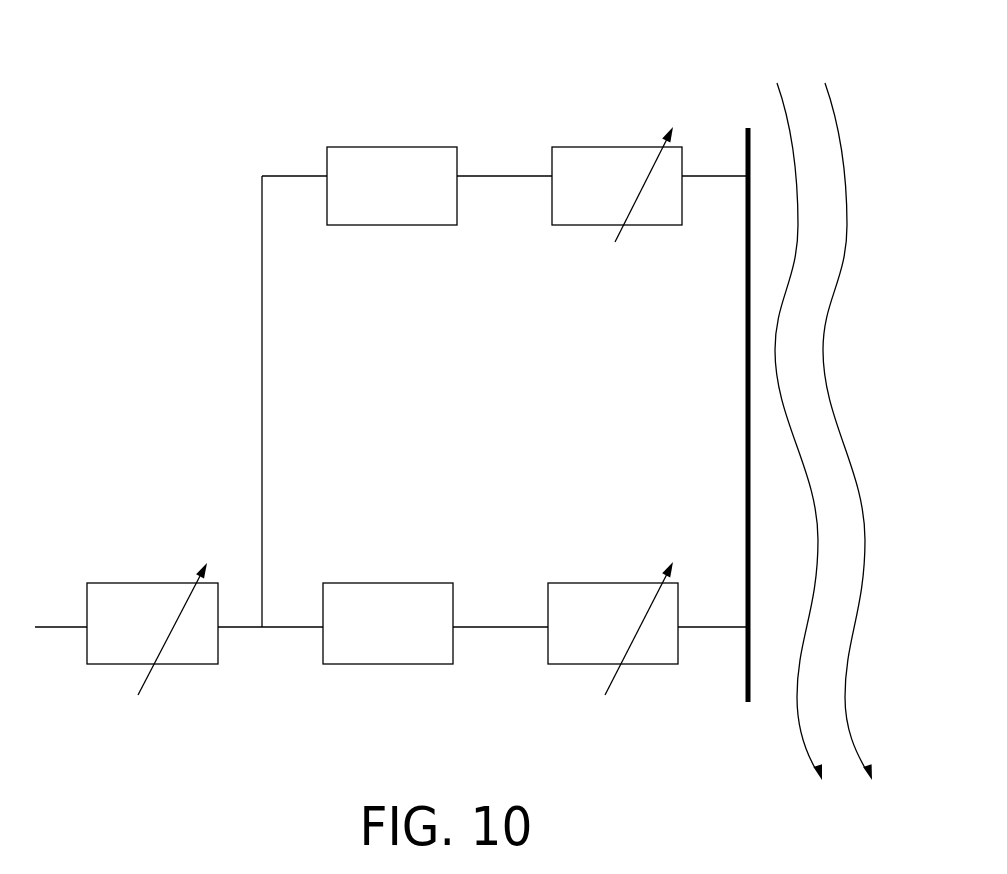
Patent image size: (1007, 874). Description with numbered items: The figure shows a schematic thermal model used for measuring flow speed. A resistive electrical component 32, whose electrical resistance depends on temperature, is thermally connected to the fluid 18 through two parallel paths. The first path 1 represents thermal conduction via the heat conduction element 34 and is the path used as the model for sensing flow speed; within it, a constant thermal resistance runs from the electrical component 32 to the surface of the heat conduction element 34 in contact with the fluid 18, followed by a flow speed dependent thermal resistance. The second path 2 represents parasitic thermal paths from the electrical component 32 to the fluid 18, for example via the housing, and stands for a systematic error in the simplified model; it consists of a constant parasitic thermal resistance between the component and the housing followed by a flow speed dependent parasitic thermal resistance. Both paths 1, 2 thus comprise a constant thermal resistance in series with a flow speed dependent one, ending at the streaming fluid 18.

The first path 1 is at (513, 582).
The second path 2 is at (288, 117).
The fluid 18 is at (783, 379).
The electrical component 32 is at (140, 583).
The heat conduction element 34 is at (535, 582).